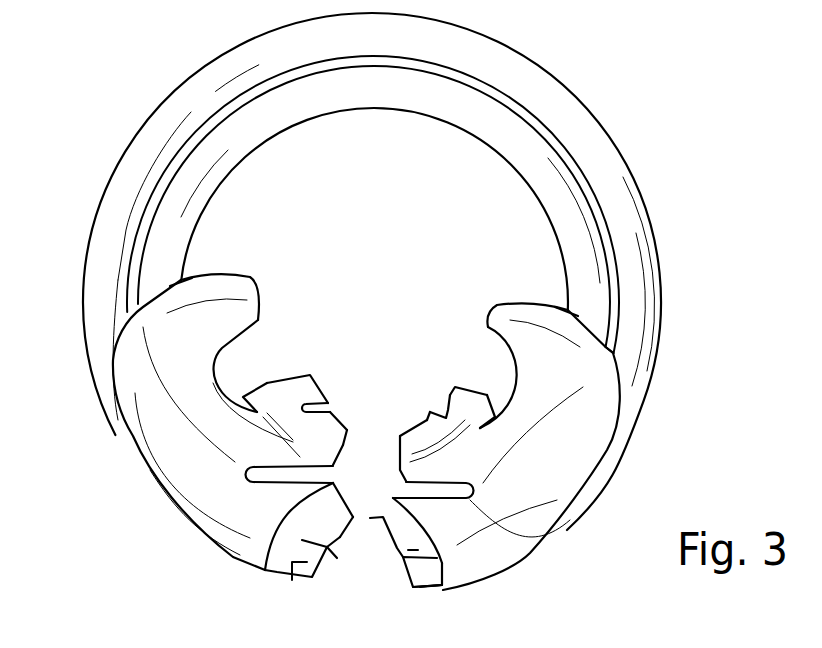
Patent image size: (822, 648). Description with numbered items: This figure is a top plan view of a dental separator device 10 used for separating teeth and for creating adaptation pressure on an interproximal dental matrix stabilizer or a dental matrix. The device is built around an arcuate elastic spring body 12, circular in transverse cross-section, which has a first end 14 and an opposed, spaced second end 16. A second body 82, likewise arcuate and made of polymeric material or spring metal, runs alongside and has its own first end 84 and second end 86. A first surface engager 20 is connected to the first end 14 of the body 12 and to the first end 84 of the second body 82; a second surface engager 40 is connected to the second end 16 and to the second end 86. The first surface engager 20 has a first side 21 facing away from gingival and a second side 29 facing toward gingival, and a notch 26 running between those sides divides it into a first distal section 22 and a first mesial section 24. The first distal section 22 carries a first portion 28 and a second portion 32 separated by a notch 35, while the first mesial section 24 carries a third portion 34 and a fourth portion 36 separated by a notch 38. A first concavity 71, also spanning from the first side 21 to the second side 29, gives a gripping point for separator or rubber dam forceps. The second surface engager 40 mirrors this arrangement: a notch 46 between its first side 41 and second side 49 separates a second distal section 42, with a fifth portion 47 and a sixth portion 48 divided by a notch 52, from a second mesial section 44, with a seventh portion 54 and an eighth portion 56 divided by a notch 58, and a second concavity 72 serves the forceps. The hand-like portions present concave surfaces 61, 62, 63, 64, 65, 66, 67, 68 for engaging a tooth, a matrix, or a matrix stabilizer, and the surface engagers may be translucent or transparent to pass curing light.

The dental separator device 10 is at (727, 185).
The elastic spring body 12 is at (387, 90).
The first end 14 is at (183, 278).
The second end 16 is at (565, 305).
The first surface engager 20 is at (220, 423).
The first side 21 is at (206, 462).
The first distal section 22 is at (250, 535).
The first mesial section 24 is at (260, 430).
The notch 26 is at (245, 470).
The first portion 28 is at (265, 572).
The second side 29 is at (340, 537).
The second portion 32 is at (340, 537).
The third portion 34 is at (345, 455).
The notch 35 is at (337, 558).
The fourth portion 36 is at (287, 377).
The notch 38 is at (325, 408).
The second surface engager 40 is at (583, 434).
The first side 41 is at (508, 462).
The second distal section 42 is at (452, 573).
The second mesial section 44 is at (473, 447).
The notch 46 is at (470, 495).
The fifth portion 47 is at (425, 585).
The sixth portion 48 is at (370, 518).
The second side 49 is at (387, 530).
The notch 52 is at (430, 557).
The seventh portion 54 is at (404, 430).
The eighth portion 56 is at (487, 392).
The notch 58 is at (435, 410).
The concave surface 61 is at (293, 563).
The concave surface 62 is at (340, 500).
The concave surface 63 is at (330, 450).
The concave surface 64 is at (307, 395).
The concave surface 65 is at (413, 570).
The concave surface 66 is at (397, 537).
The concave surface 67 is at (423, 437).
The second tip slot edge 68 is at (453, 400).
The first concavity 71 is at (222, 348).
The second concavity 72 is at (507, 398).
The second body 82 is at (577, 118).
The first end 84 is at (103, 355).
The second end 86 is at (627, 427).